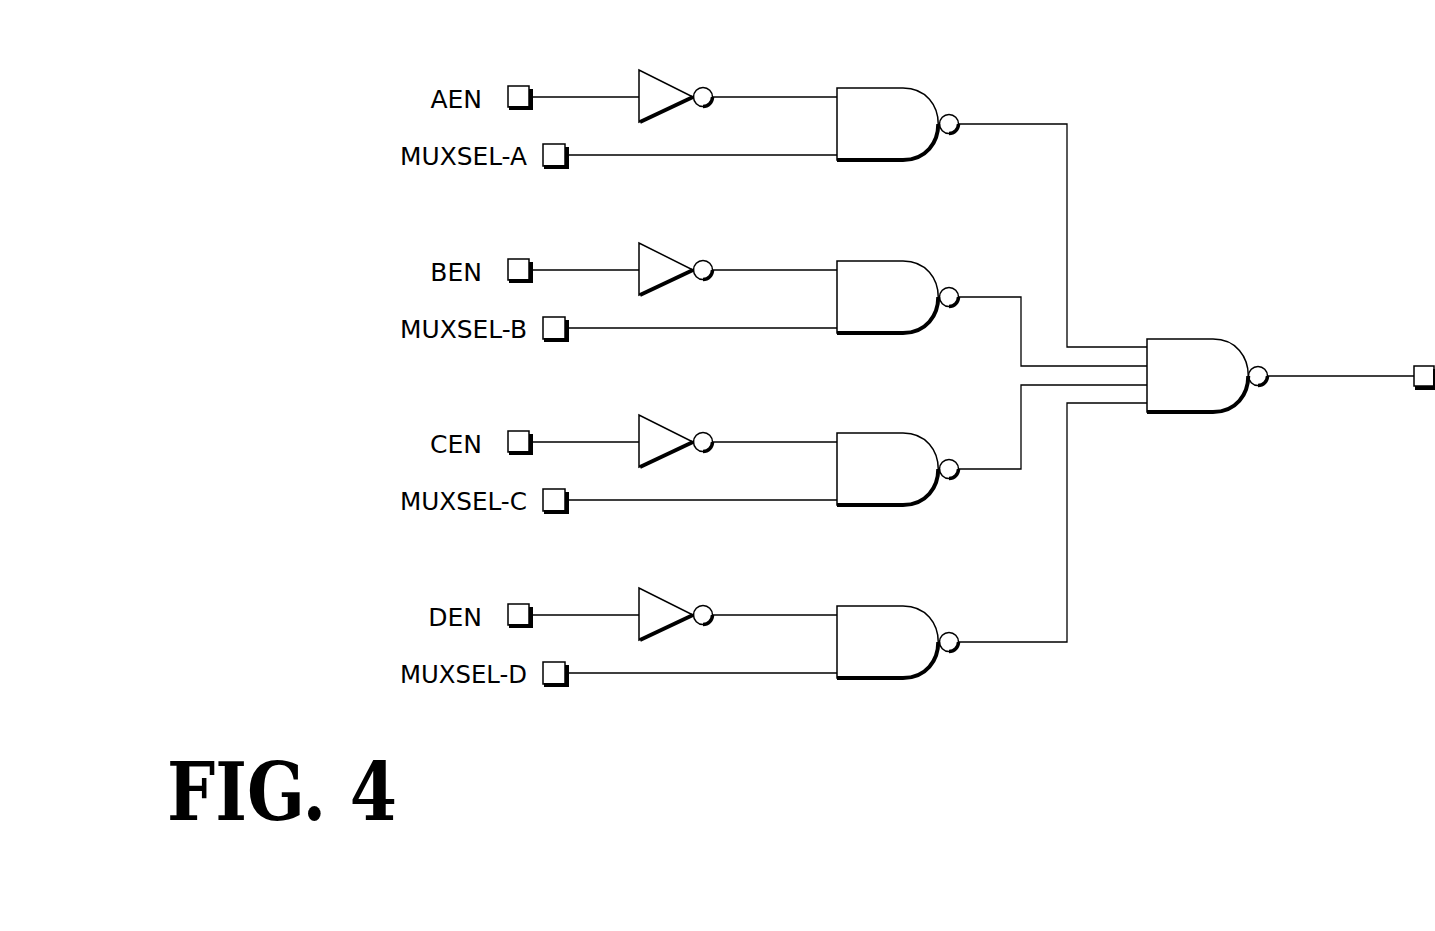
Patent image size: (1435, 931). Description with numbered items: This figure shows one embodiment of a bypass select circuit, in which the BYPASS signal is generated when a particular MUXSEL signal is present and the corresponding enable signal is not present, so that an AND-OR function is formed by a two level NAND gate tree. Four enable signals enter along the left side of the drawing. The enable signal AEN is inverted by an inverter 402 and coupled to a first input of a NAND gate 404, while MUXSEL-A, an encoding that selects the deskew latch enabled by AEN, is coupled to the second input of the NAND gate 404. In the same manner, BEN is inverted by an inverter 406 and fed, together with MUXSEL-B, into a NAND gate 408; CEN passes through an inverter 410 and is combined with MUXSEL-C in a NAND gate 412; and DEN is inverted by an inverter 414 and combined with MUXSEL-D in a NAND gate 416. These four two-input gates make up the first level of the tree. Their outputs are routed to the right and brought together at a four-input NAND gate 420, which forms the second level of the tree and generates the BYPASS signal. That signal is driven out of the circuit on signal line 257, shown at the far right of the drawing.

The inverter 402 is at (661, 71).
The NAND gate 404 is at (889, 87).
The inverter 406 is at (661, 244).
The NAND gate 408 is at (889, 260).
The inverter 410 is at (661, 416).
The NAND gate 412 is at (889, 432).
The inverter 414 is at (661, 589).
The NAND gate 416 is at (889, 605).
The four-input NAND gate 420 is at (1213, 338).
The signal line 257 is at (1337, 378).